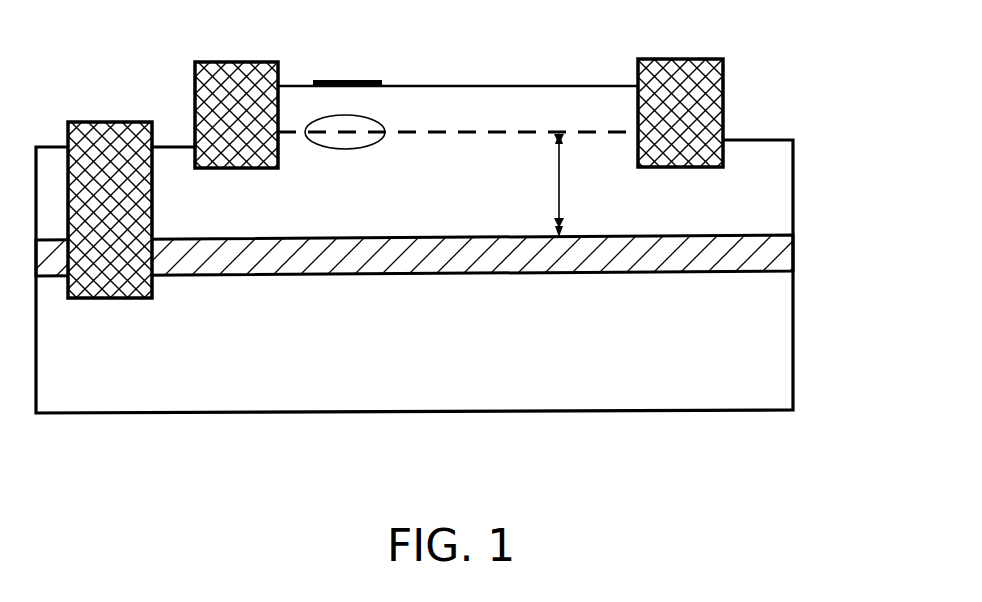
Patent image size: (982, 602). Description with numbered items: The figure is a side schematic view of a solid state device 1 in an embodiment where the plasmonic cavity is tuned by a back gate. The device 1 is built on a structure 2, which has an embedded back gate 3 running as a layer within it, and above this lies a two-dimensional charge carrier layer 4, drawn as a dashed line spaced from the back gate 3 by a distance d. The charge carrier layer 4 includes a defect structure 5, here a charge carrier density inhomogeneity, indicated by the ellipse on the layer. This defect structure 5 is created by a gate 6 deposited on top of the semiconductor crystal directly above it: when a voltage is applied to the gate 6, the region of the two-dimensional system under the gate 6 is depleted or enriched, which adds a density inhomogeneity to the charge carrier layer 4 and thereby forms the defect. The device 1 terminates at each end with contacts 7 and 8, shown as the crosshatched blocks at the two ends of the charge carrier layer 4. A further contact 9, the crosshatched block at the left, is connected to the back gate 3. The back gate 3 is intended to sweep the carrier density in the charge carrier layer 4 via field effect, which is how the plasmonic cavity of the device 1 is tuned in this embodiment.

The solid state device 1 is at (776, 93).
The structure 2 is at (160, 392).
The back gate 3 is at (480, 255).
The two-dimensional charge carrier layer 4 is at (465, 133).
The defect structure 5 is at (332, 150).
The gate 6 is at (348, 80).
The contact 7 is at (232, 78).
The contact 8 is at (675, 75).
The contact 9 is at (95, 140).